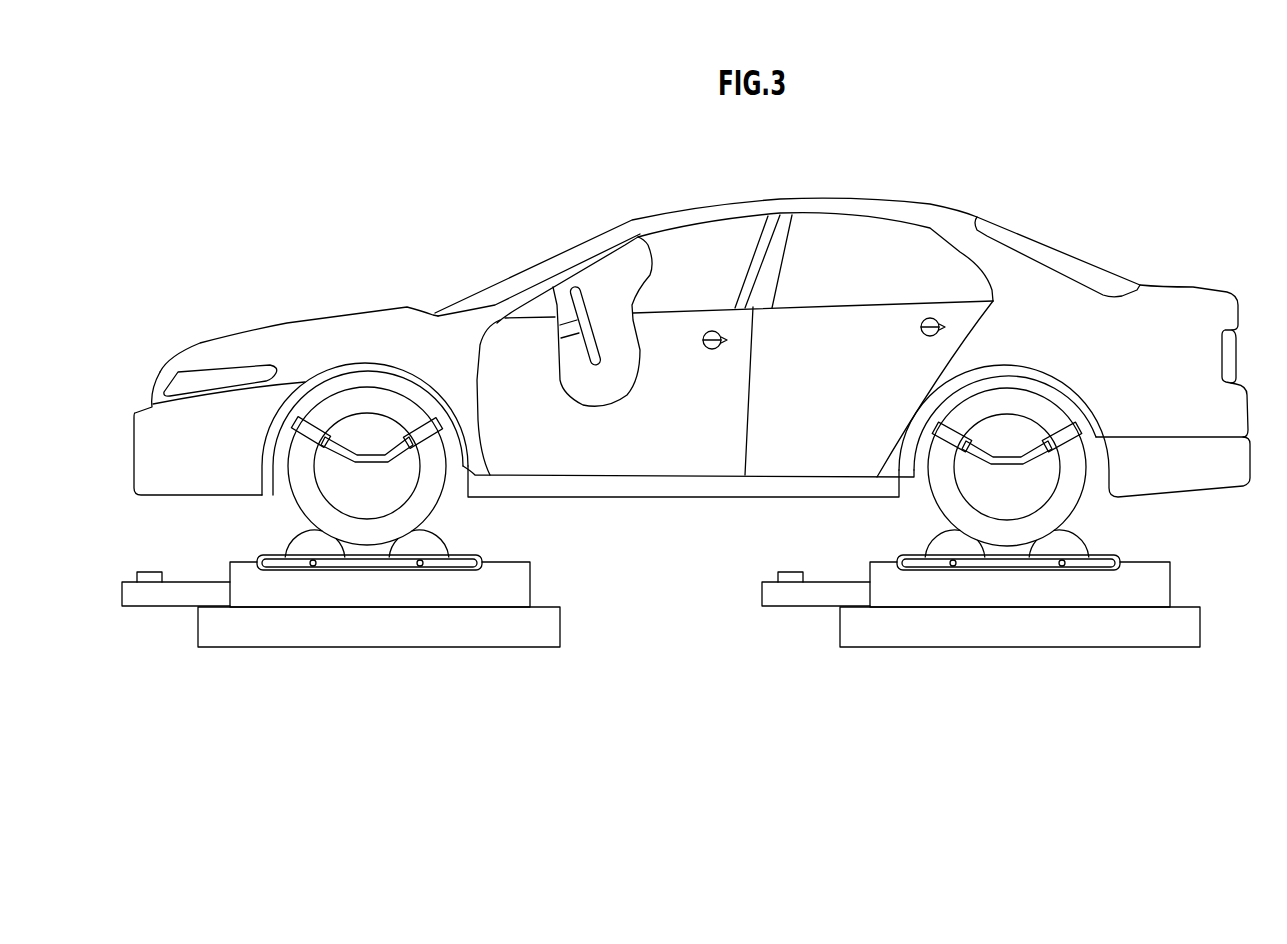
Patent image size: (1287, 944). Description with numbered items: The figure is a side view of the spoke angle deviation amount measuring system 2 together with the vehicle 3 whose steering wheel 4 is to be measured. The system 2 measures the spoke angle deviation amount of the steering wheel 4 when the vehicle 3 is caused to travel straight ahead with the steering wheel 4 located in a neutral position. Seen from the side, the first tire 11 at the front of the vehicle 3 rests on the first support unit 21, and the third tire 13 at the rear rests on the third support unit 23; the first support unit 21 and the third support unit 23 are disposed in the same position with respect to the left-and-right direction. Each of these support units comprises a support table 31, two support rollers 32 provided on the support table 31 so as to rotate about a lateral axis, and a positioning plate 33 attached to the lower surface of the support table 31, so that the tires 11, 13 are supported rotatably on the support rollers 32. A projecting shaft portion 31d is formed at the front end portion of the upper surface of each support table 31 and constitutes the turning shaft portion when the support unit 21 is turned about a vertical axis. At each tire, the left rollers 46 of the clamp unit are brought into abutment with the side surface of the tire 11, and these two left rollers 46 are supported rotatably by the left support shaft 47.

The spoke angle deviation amount measuring system 2 is at (700, 617).
The vehicle 3 is at (692, 350).
The steering wheel 4 is at (583, 296).
The first tire 11 is at (302, 469).
The third tire 13 is at (1070, 471).
The first support unit 21 is at (560, 587).
The third support unit 23 is at (1198, 587).
The support table 31 is at (182, 592).
The projecting shaft portion 31d is at (148, 571).
The support roller 32 is at (296, 540).
The positioning plate 33 is at (277, 637).
The left roller 46 is at (296, 420).
The left support shaft 47 is at (367, 465).